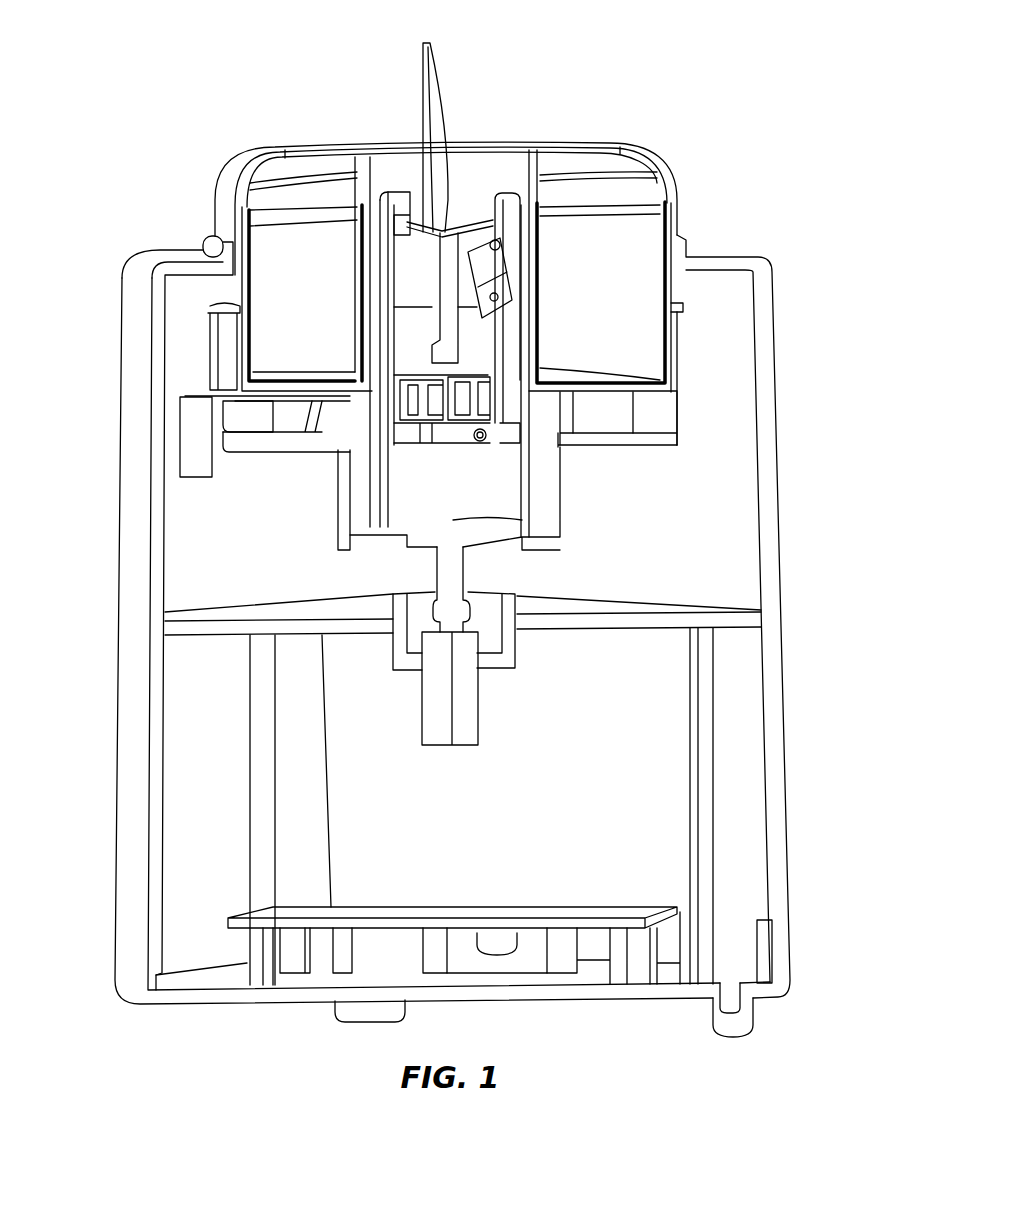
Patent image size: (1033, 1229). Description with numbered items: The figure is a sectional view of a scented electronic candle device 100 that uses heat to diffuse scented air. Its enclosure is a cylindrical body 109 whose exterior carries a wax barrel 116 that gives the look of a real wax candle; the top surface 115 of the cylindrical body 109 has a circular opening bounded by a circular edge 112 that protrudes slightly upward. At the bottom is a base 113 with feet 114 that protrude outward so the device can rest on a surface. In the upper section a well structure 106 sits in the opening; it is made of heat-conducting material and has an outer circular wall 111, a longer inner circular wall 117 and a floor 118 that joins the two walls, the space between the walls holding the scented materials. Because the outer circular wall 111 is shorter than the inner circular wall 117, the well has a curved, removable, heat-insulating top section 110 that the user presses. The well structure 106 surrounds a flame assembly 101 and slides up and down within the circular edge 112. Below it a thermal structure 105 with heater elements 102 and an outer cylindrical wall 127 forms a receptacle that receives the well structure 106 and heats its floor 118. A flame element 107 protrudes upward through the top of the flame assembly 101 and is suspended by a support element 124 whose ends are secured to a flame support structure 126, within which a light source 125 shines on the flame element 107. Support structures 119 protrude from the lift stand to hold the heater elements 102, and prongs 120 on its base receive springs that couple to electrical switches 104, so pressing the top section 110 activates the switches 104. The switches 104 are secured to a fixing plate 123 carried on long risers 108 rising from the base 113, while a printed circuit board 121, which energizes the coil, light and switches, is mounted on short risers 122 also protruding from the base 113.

The scented electronic candle device 100 is at (455, 555).
The flame assembly 101 is at (386, 433).
The heater element 102 is at (222, 424).
The electrical switch 104 is at (416, 726).
The thermal structure 105 is at (682, 389).
The well structure 106 is at (644, 240).
The flame element 107 is at (452, 90).
The long riser 108 is at (720, 769).
The cylindrical body 109 is at (766, 547).
The top section 110 is at (218, 176).
The outer circular wall 111 is at (672, 277).
The circular edge 112 is at (212, 246).
The base 113 is at (340, 541).
The feet 114 is at (335, 1027).
The top surface 115 is at (182, 250).
The wax barrel 116 is at (150, 623).
The inner circular wall 117 is at (540, 250).
The floor 118 is at (606, 396).
The support structure 119 is at (651, 456).
The prong 120 is at (458, 581).
The printed circuit board 121 is at (621, 912).
The short riser 122 is at (656, 949).
The fixing plate 123 is at (591, 640).
The support element 124 is at (422, 222).
The light source 125 is at (486, 265).
The flame support structure 126 is at (400, 225).
The outer cylindrical wall 127 is at (212, 346).